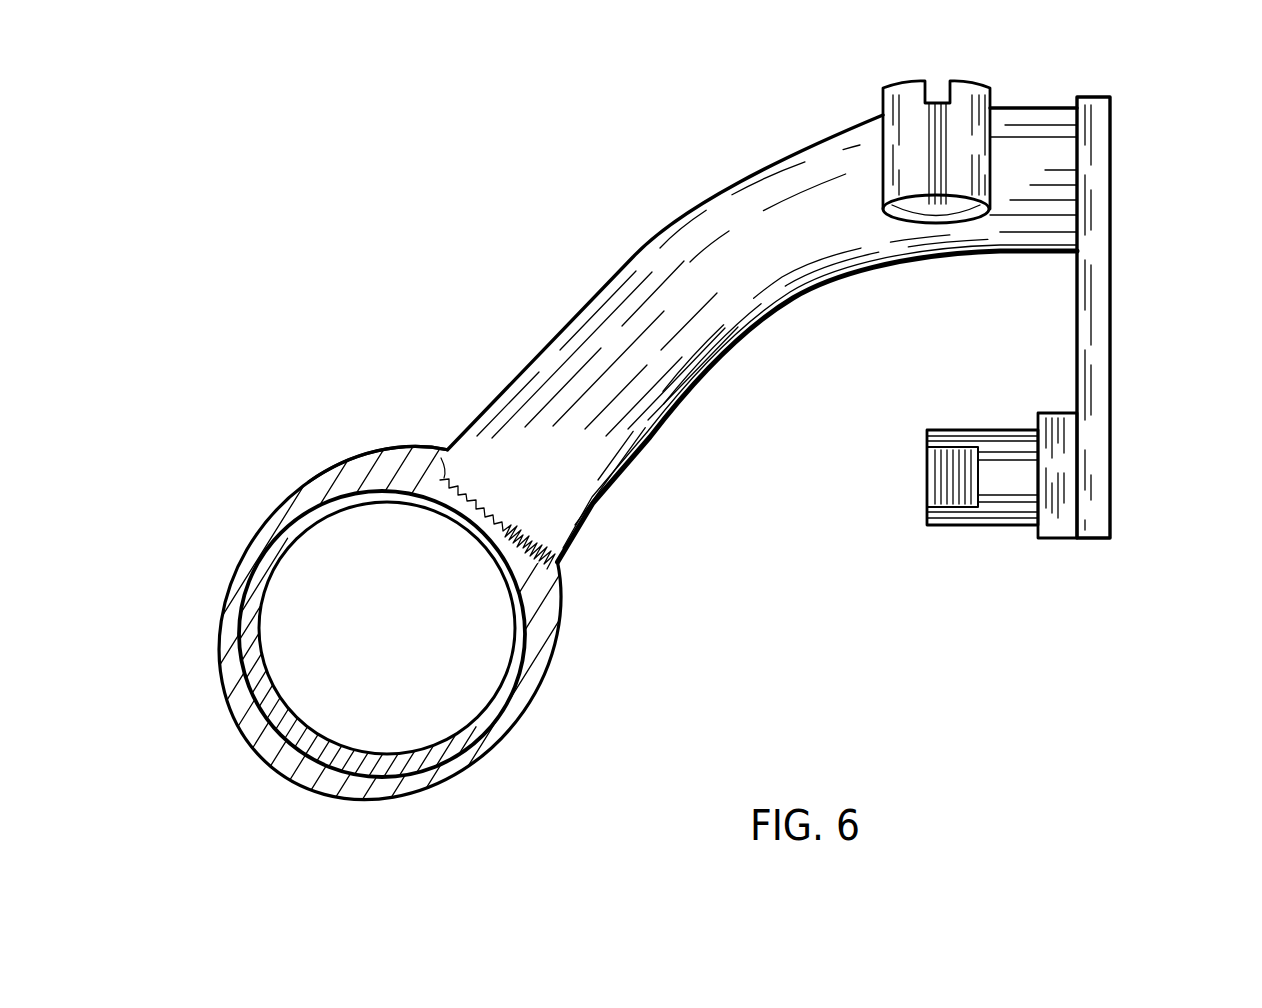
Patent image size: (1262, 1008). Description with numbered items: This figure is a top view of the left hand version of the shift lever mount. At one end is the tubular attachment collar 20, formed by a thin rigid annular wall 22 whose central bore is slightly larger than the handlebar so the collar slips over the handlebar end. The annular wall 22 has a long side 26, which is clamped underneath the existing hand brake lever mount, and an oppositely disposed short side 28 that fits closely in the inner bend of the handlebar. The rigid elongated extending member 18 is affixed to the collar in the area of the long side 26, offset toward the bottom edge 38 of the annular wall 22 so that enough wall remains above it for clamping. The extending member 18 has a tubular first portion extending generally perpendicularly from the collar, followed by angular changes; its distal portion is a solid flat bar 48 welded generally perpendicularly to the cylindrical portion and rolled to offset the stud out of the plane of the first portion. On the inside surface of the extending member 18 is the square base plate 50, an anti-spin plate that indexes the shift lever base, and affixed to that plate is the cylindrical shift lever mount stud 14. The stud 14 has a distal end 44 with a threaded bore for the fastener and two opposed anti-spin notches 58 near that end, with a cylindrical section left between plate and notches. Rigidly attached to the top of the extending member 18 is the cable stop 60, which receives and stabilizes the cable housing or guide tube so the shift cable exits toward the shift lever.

The shift lever mount stud 14 is at (988, 527).
The extending member 18 is at (905, 253).
The attachment collar 20 is at (560, 617).
The annular wall 22 is at (520, 708).
The long side 26 is at (422, 515).
The short side 28 is at (302, 777).
The bottom edge 38 is at (380, 445).
The distal end 44 is at (927, 473).
The flat bar 48 is at (1112, 265).
The square base plate 50 is at (1050, 540).
The anti-spin notches 58 is at (928, 433).
The cable stop 60 is at (885, 90).